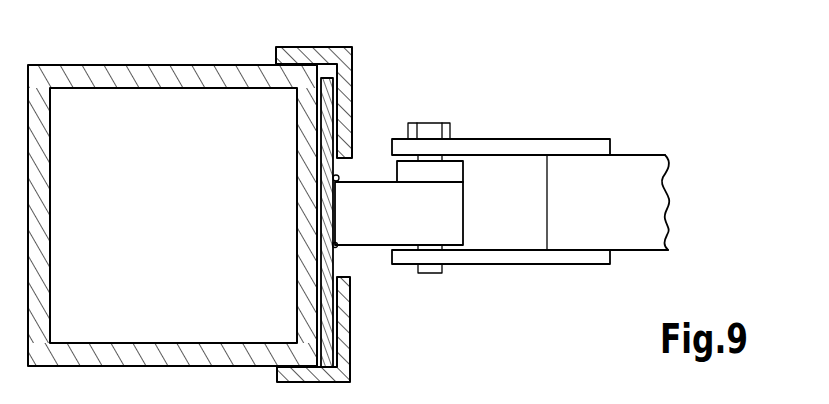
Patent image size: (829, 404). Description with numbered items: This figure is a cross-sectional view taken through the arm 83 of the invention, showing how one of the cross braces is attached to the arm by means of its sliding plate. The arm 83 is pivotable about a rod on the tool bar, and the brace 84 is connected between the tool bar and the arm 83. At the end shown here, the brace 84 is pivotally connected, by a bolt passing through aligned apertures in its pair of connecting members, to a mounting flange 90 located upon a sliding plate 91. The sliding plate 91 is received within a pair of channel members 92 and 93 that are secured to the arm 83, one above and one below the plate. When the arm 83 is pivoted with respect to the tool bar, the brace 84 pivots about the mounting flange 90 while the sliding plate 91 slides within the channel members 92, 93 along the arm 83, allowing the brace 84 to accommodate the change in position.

The arm 83 is at (123, 67).
The brace 84 is at (648, 155).
The mounting flange 90 is at (368, 182).
The sliding plate 91 is at (333, 262).
The channel member 92 is at (350, 77).
The channel member 93 is at (350, 362).